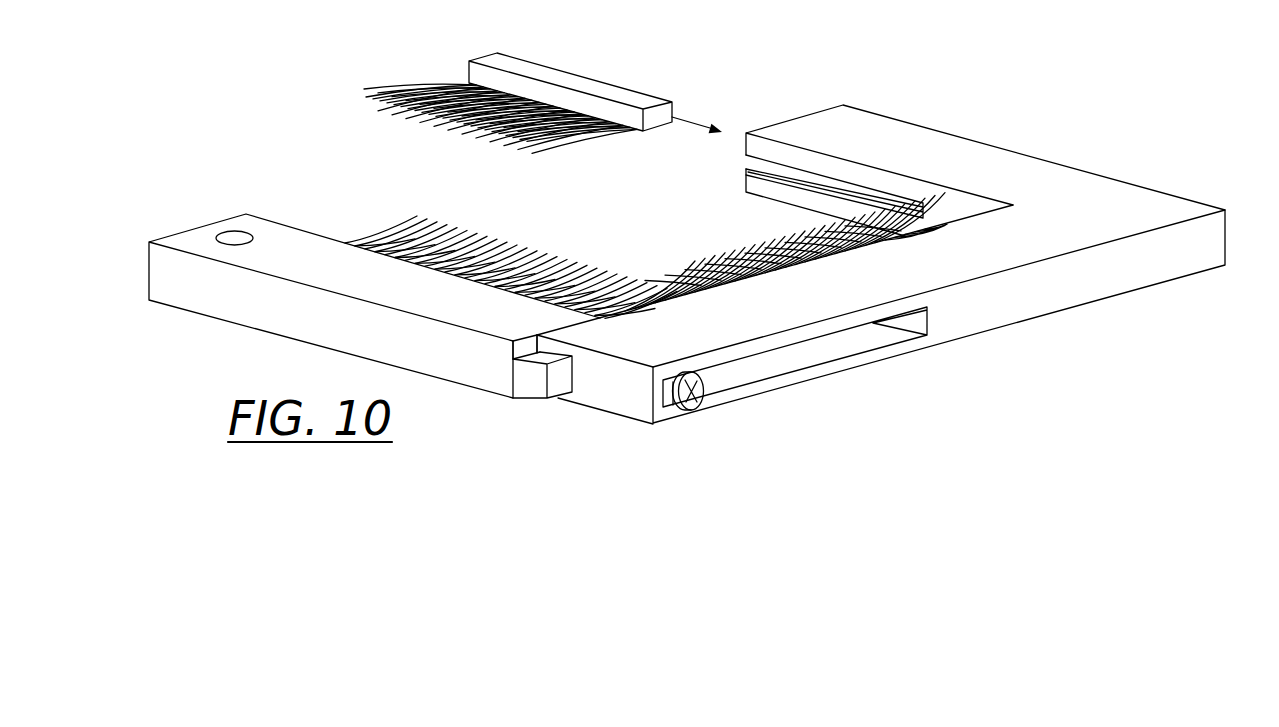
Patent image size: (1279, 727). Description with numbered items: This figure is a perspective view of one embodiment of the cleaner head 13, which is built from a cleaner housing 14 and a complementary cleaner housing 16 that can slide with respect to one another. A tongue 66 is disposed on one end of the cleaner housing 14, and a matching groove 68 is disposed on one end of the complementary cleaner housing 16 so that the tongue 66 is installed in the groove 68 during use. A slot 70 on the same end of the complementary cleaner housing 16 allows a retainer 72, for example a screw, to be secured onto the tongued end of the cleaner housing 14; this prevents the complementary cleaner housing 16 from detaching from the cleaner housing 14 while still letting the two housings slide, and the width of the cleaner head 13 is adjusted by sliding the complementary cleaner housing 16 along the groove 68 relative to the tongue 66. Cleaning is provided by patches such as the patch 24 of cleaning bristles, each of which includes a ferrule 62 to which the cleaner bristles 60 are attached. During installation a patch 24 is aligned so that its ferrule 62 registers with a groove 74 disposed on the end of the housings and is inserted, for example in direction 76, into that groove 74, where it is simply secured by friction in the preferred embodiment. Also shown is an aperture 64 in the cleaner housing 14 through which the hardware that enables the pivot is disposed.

The cleaner head 13 is at (943, 65).
The cleaner housing 14 is at (218, 305).
The complementary cleaner housing 16 is at (843, 105).
The patch of cleaning bristles 24 is at (580, 52).
The cleaner bristles 60 is at (437, 75).
The ferrule 62 is at (492, 63).
The aperture 64 is at (235, 232).
The tongue 66 is at (535, 377).
The groove 68 is at (572, 380).
The slot 70 is at (840, 358).
The retainer 72 is at (700, 400).
The groove 74 is at (750, 164).
The insertion direction 76 is at (680, 112).